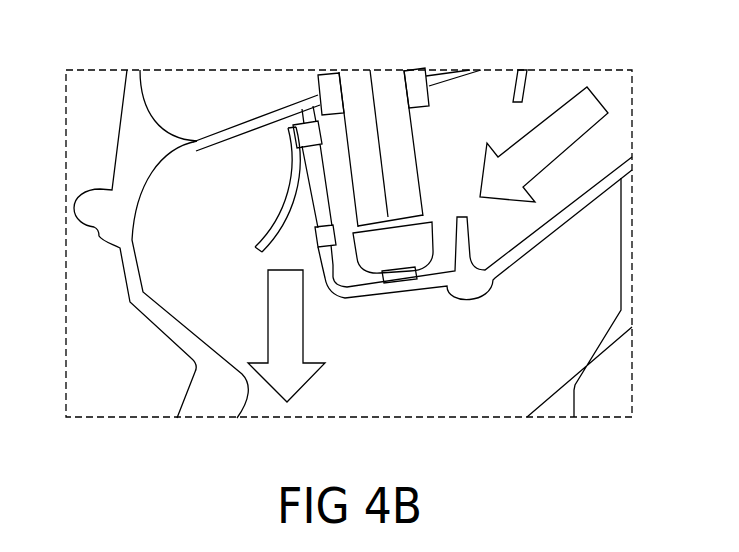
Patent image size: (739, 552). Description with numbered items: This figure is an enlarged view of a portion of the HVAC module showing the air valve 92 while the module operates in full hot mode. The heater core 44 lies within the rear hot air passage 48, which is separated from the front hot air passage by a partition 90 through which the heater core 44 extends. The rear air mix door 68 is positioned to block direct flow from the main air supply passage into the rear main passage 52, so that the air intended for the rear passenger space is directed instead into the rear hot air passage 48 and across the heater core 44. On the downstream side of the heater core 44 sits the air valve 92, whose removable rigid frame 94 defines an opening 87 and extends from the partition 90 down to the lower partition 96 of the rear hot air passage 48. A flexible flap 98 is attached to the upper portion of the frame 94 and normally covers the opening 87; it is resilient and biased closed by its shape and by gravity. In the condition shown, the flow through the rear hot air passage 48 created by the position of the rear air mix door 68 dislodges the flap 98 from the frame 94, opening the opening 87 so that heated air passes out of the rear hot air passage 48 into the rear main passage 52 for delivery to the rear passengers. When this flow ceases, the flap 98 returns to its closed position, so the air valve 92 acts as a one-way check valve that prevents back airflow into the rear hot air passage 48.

The heater core 44 is at (399, 122).
The rear hot air passage 48 is at (472, 152).
The rear main passage 52 is at (501, 392).
The rear air mix door 68 is at (593, 184).
The opening 87 is at (352, 172).
The partition 90 is at (280, 112).
The air valve 92 is at (243, 167).
The frame 94 is at (266, 257).
The lower partition 96 is at (331, 280).
The flap 98 is at (290, 173).